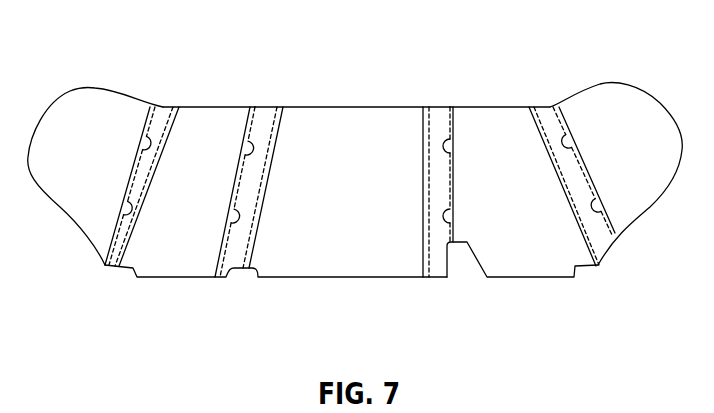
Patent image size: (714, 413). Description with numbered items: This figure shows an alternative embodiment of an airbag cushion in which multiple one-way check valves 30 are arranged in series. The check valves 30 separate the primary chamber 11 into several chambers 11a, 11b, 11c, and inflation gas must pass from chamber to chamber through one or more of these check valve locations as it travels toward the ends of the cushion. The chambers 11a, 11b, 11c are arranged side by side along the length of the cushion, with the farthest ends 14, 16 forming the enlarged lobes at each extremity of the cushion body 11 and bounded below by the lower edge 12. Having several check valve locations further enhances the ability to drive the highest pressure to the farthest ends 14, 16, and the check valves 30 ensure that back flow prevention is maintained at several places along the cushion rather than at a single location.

The primary chamber 11 is at (310, 253).
The chamber 11a is at (350, 130).
The chamber 11b is at (207, 145).
The chamber 11c is at (492, 113).
The bottom edge tab 12 is at (561, 250).
The farthest end 14 is at (85, 112).
The farthest end 16 is at (637, 98).
The one-way check valve 30 is at (108, 238).